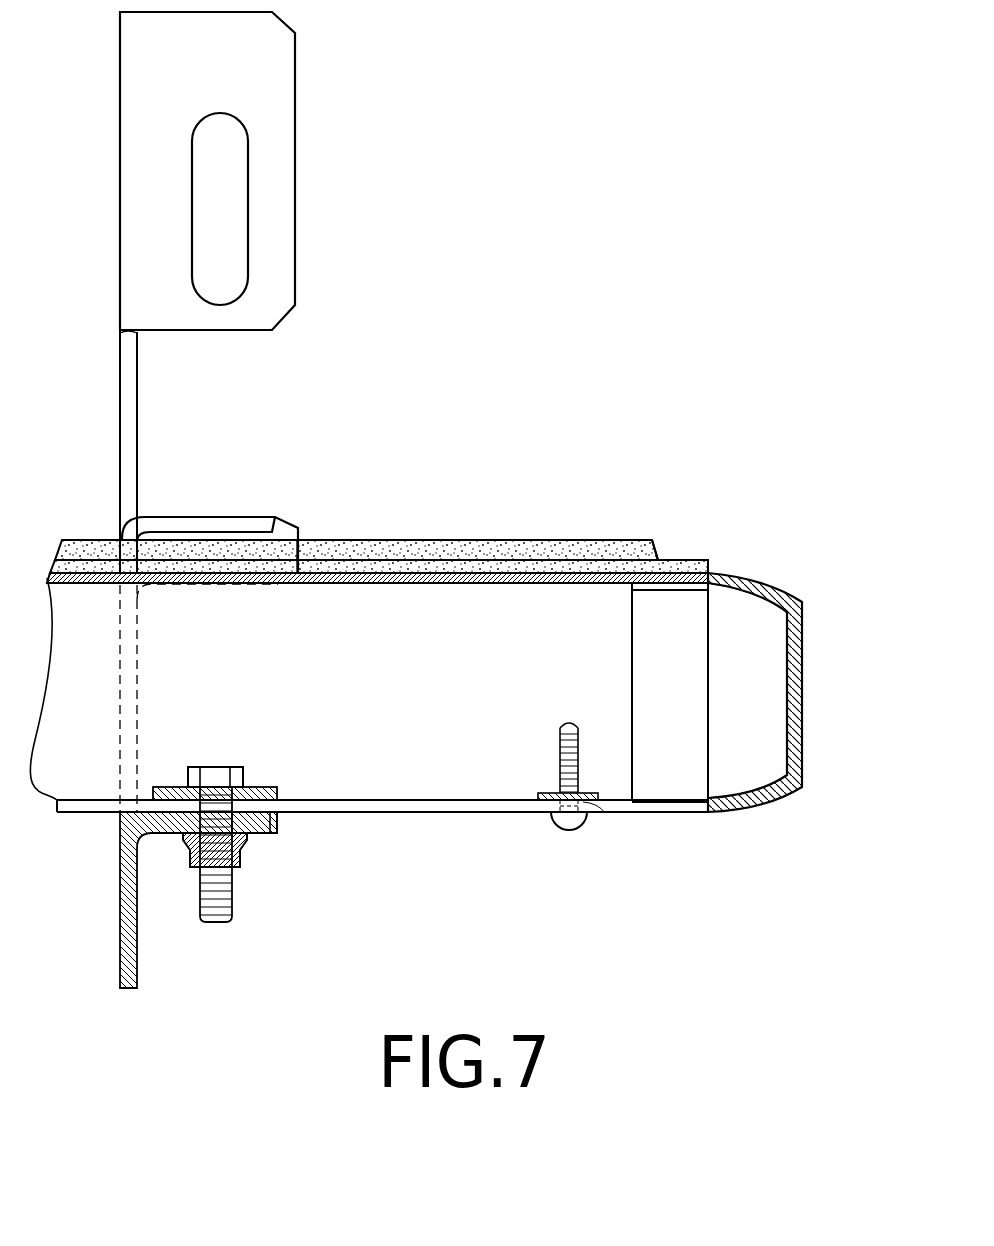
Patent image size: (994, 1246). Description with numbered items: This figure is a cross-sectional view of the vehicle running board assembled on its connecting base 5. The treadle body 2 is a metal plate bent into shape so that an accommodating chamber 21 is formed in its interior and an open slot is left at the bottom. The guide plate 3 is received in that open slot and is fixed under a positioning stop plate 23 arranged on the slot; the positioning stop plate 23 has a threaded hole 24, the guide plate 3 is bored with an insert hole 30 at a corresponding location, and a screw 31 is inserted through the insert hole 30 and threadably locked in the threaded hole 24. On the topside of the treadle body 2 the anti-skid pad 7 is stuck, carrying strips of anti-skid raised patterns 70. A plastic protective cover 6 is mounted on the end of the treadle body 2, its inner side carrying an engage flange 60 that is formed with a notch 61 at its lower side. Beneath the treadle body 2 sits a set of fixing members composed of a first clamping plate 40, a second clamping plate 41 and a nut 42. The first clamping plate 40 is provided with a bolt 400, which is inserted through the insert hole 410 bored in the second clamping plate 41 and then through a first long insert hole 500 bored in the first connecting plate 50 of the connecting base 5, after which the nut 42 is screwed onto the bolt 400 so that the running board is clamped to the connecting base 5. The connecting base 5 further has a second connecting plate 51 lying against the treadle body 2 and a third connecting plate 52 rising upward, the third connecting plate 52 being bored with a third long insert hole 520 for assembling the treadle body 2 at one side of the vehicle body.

The third connecting plate 52 is at (272, 105).
The third long insert hole 520 is at (233, 220).
The connecting base 5 is at (120, 427).
The second connecting plate 51 is at (217, 527).
The anti-skid raised patterns 70 is at (556, 540).
The anti-skid pad 7 is at (672, 560).
The treadle body 2 is at (462, 573).
The accommodating chamber 21 is at (366, 618).
The protective cover 6 is at (802, 710).
The engage flange 60 is at (668, 597).
The notch 61 is at (713, 813).
The guide plate 3 is at (457, 806).
The positioning stop plate 23 is at (536, 794).
The threaded hole 24 is at (546, 803).
The screw 31 is at (568, 818).
The insert hole 30 is at (605, 813).
The first clamping plate 40 is at (278, 792).
The second clamping plate 41 is at (278, 815).
The first connecting plate 50 is at (248, 817).
The insert hole 410 is at (255, 820).
The nut 42 is at (193, 862).
The bolt 400 is at (215, 910).
The first long insert hole 500 is at (122, 837).